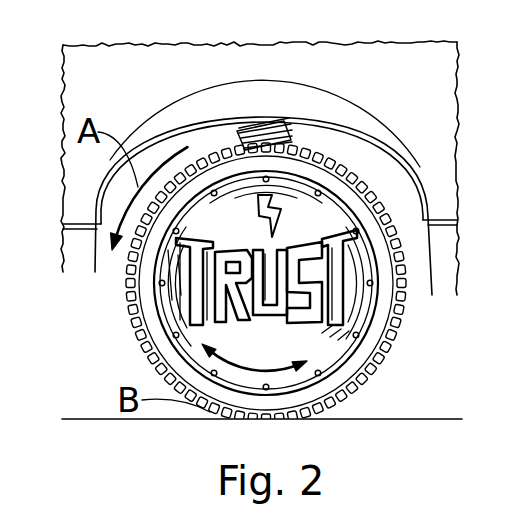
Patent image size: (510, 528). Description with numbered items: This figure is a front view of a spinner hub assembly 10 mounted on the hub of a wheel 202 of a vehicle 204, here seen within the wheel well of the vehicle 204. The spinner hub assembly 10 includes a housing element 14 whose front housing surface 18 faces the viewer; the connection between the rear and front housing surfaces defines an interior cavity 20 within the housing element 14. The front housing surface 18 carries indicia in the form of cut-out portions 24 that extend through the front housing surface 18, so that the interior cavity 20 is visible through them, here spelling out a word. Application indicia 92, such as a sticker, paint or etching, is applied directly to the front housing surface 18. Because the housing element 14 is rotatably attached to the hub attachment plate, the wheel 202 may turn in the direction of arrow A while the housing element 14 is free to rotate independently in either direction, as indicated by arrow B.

The spinner hub assembly 10 is at (380, 386).
The housing element 14 is at (142, 318).
The front housing surface 18 is at (235, 228).
The interior cavity 20 is at (307, 290).
The cut-out portions 24 is at (222, 338).
The application indicia 92 is at (275, 205).
The wheel 202 is at (343, 192).
The vehicle 204 is at (148, 92).